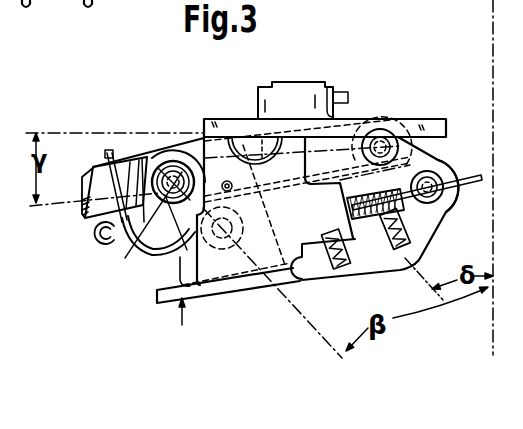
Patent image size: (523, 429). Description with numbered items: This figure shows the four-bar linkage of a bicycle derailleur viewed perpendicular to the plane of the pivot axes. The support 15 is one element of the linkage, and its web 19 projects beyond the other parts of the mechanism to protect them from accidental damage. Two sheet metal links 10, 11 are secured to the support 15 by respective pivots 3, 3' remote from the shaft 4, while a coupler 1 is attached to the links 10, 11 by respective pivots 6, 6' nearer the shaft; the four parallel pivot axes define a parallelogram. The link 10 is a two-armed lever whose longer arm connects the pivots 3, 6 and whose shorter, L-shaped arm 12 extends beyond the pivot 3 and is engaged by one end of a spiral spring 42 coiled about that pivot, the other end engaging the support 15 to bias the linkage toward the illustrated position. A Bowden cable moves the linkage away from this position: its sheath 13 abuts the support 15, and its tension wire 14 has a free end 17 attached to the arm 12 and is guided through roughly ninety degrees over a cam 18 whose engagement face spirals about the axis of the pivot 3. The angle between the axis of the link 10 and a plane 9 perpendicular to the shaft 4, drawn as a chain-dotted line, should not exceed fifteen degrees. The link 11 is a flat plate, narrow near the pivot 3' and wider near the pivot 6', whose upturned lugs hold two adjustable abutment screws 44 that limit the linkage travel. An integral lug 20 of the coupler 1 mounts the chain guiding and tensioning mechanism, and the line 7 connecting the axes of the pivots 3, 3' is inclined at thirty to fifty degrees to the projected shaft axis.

The coupler 1 is at (296, 99).
The pivot 3 is at (157, 232).
The pivot 3' is at (222, 271).
The shaft 4 is at (492, 61).
The pivot 6 is at (382, 112).
The pivot 6' is at (444, 201).
The line connecting the axes of the pivots 3, 3' 7 is at (305, 318).
The plane perpendicular to the shaft 9 is at (70, 133).
The sheet metal link 10 is at (352, 160).
The sheet metal link 11 is at (373, 252).
The L-shaped arm 12 is at (141, 168).
The sheath 13 is at (427, 232).
The tension wire 14 is at (453, 176).
The support 15 is at (179, 327).
The free end of the tension wire 17 is at (107, 150).
The cam 18 is at (127, 254).
The web 19 is at (154, 300).
The integral lug 20 is at (342, 92).
The spiral spring 42 is at (96, 238).
The abutment screws 44 is at (341, 272).